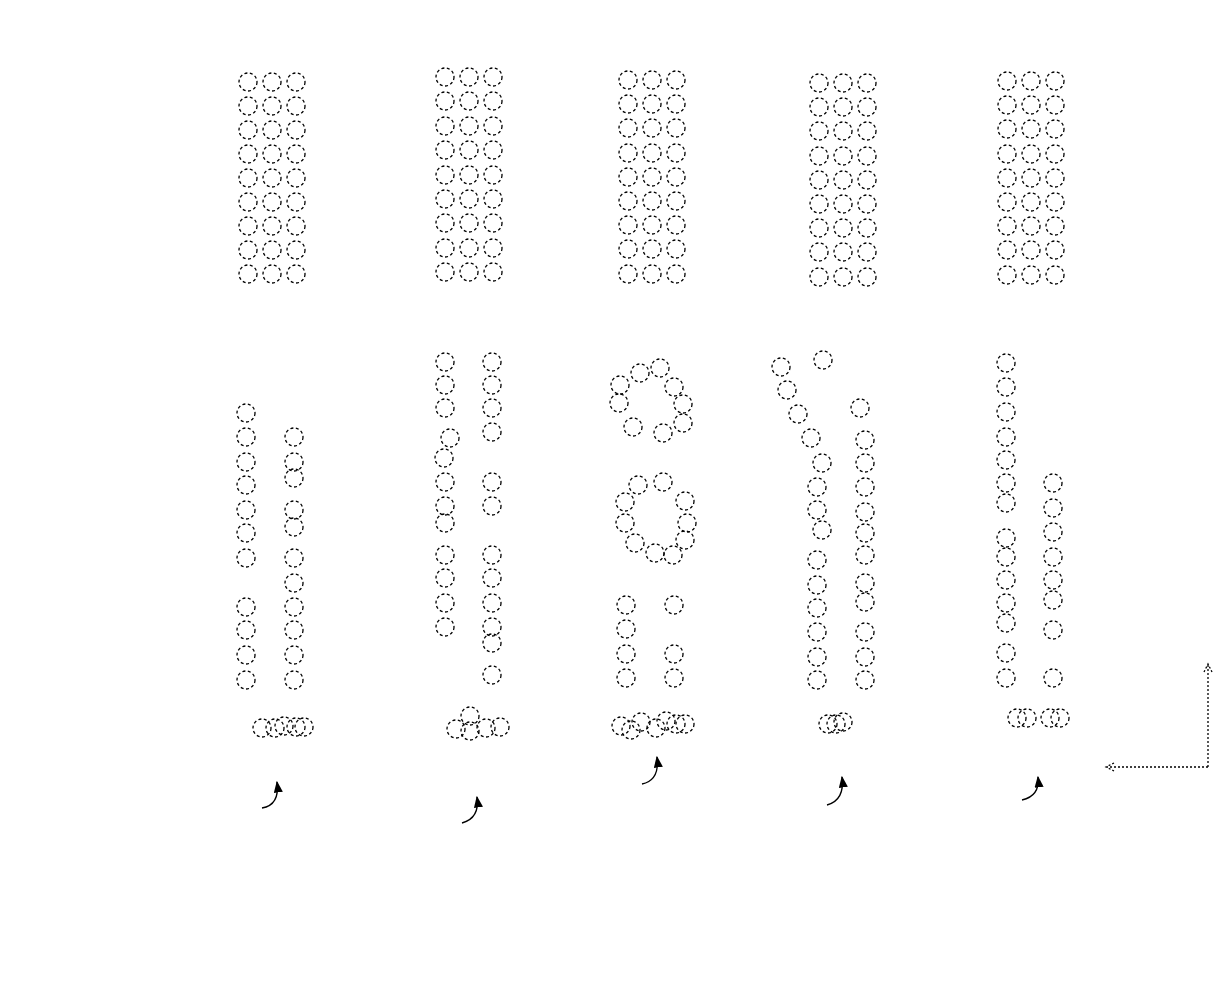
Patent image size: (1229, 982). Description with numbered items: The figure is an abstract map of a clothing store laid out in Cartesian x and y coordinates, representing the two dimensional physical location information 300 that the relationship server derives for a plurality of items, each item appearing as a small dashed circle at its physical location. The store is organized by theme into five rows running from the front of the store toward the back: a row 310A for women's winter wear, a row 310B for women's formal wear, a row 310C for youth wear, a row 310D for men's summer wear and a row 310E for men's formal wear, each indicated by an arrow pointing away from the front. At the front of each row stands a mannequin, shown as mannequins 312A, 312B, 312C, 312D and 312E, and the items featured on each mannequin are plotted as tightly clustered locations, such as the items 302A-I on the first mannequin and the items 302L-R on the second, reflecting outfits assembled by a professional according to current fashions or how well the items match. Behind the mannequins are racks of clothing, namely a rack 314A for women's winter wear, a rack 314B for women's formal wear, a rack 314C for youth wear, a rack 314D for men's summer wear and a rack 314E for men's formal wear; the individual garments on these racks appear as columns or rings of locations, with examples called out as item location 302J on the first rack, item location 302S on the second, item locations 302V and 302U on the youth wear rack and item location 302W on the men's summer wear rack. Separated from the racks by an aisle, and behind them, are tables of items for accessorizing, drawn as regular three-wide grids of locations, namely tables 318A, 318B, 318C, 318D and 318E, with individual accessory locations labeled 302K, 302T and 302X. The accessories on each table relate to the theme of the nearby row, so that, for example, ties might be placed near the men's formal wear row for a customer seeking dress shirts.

The physical location information 300 is at (1092, 62).
The table of items for accessorizing 318A is at (328, 142).
The table of items for accessorizing 318B is at (514, 146).
The table of items for accessorizing 318C is at (706, 147).
The table of items for accessorizing 318D is at (890, 155).
The table of items for accessorizing 318E is at (1084, 160).
The physical location of an item 302K is at (241, 229).
The physical location of an item 302T is at (438, 226).
The physical location of an item 302X is at (1000, 228).
The rack of items of clothing 314A is at (222, 397).
The rack of items of clothing 314B is at (402, 378).
The rack of items of clothing 314C is at (618, 358).
The rack of items of clothing 314D is at (888, 375).
The rack of items of clothing 314E is at (1054, 392).
The physical location of an item 302J is at (240, 631).
The physical location of an item 302S is at (438, 410).
The physical location of an item 302V is at (617, 411).
The physical location of an item 302W is at (808, 448).
The physical location of an item 302U is at (619, 632).
The mannequin 312A is at (252, 722).
The mannequin 312B is at (446, 698).
The mannequin 312C is at (617, 705).
The mannequin 312D is at (814, 707).
The mannequin 312E is at (1003, 705).
The physical locations of items 302A-I is at (256, 745).
The physical locations of items 302L-R is at (437, 747).
The row 310A is at (245, 799).
The row 310B is at (445, 814).
The row 310C is at (626, 774).
The row 310D is at (809, 795).
The row 310E is at (1005, 793).